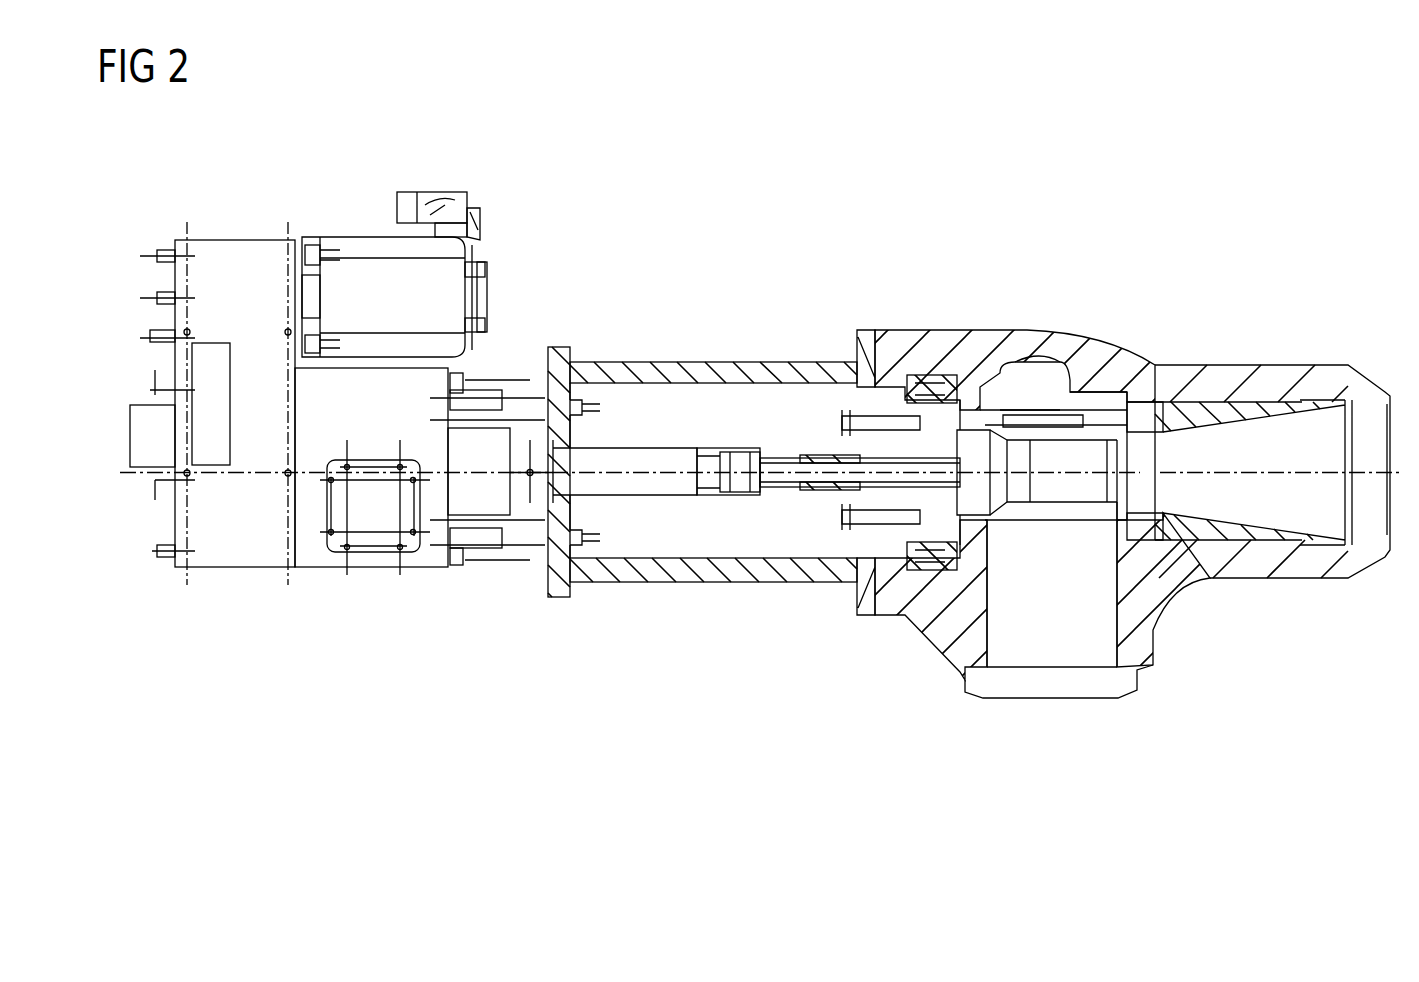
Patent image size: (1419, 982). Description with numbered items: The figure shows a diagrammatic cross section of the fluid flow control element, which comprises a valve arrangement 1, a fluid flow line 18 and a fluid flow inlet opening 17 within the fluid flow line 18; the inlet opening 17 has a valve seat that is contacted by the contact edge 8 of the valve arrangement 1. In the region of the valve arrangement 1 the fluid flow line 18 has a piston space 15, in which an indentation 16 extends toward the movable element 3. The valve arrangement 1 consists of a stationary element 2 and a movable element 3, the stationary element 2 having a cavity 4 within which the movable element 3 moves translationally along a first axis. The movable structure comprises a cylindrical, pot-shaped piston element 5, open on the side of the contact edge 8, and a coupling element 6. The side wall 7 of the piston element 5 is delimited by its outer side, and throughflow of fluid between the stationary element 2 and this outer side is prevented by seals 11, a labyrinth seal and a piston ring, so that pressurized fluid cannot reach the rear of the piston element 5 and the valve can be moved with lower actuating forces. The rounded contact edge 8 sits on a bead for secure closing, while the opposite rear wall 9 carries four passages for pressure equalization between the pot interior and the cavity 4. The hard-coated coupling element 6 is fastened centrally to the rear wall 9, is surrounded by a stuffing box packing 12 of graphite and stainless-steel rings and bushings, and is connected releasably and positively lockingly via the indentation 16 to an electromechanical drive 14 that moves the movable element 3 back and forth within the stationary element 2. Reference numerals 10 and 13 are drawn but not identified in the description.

The valve arrangement 1 is at (997, 390).
The stationary element 2 is at (975, 400).
The movable element 3 is at (1128, 388).
The cavity 4 is at (985, 505).
The piston element 5 is at (1092, 507).
The coupling element 6 is at (790, 475).
The side wall 7 is at (1105, 518).
The contact edge 8 is at (1158, 438).
The rear wall 9 is at (983, 490).
The bearing 10 is at (935, 395).
The seals 11 is at (1052, 415).
The stuffing box packing 12 is at (857, 425).
The coupling 13 is at (757, 492).
The electromechanical drive 14 is at (384, 610).
The piston space 15 is at (1030, 380).
The indentation 16 is at (1097, 435).
The fluid flow inlet opening 17 is at (1160, 458).
The fluid flow line 18 is at (1082, 632).